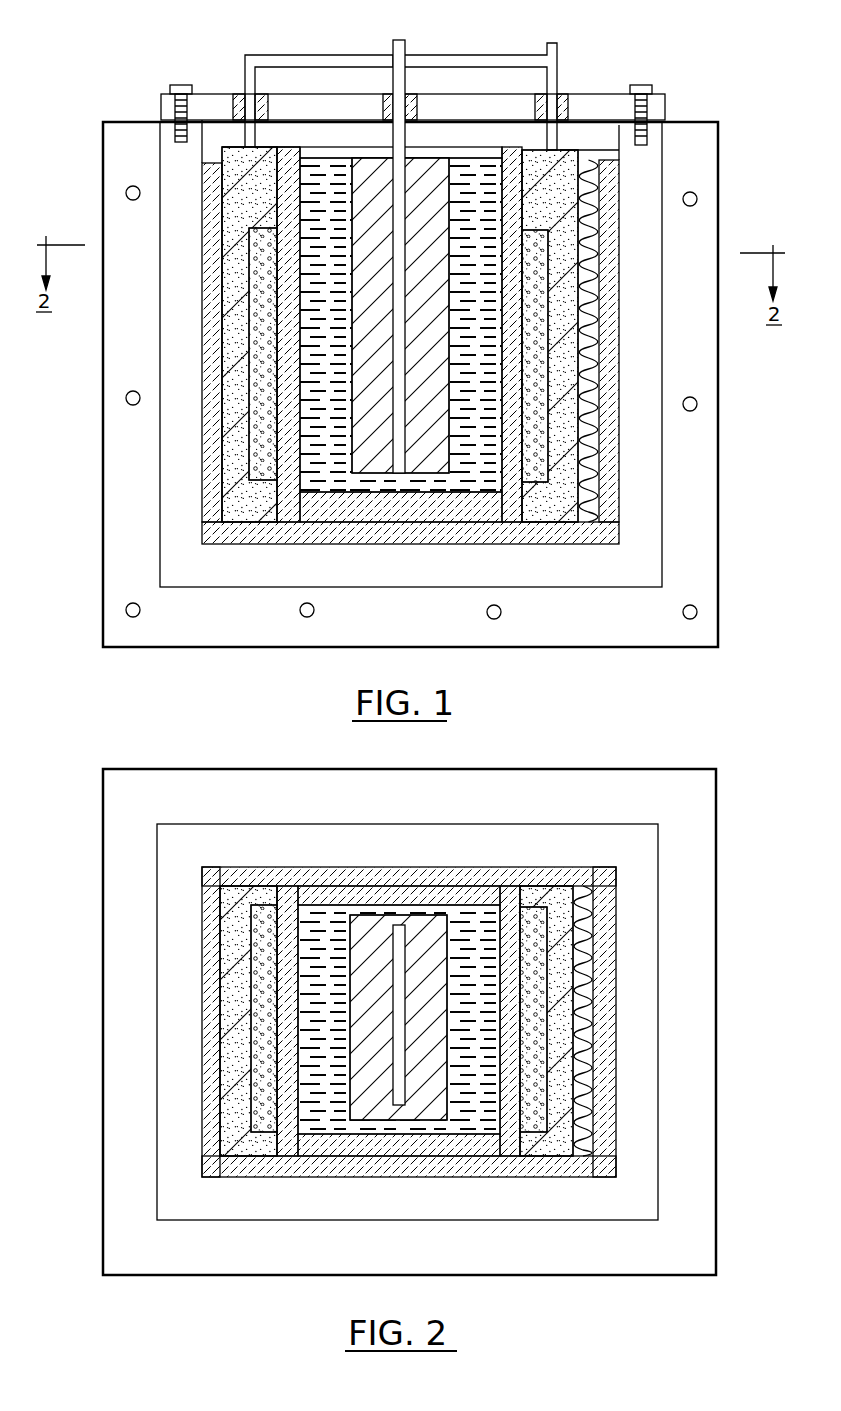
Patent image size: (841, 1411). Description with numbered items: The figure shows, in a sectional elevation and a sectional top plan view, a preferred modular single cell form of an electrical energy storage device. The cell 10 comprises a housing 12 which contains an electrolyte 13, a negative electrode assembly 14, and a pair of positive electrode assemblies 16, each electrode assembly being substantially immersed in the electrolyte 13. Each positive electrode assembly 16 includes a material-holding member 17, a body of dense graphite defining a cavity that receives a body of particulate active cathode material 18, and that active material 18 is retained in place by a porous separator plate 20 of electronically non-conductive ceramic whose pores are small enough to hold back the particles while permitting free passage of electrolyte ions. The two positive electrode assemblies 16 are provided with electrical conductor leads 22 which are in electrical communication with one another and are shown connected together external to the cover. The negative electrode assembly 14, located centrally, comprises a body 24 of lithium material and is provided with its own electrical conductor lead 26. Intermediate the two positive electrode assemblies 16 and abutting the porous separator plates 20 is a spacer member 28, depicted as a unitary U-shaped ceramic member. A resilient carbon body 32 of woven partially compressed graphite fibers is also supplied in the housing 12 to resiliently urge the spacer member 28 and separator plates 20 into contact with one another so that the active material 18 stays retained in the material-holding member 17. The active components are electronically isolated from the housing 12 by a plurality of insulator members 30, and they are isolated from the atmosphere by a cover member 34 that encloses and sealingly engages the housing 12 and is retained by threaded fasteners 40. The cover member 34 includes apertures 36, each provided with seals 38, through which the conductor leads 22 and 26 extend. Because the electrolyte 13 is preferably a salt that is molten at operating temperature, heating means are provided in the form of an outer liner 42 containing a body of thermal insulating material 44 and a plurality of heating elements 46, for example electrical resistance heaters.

In FIG. 1, the cell 10 is at (613, 92).
In FIG. 1, the housing 12 is at (665, 168).
In FIG. 2, the housing 12 is at (170, 838).
In FIG. 1, the electrolyte 13 is at (401, 325).
In FIG. 2, the electrolyte 13 is at (398, 1019).
In FIG. 1, the negative electrode assembly 14 is at (439, 152).
In FIG. 2, the negative electrode assembly 14 is at (398, 1017).
In FIG. 1, the positive electrode assembly 16 is at (237, 142).
In FIG. 1, the material-holding member 17 is at (258, 525).
In FIG. 2, the material-holding member 17 is at (560, 895).
In FIG. 1, the particulate active cathode material 18 is at (249, 320).
In FIG. 2, the particulate active cathode material 18 is at (262, 905).
In FIG. 1, the porous separator plate 20 is at (292, 525).
In FIG. 2, the porous separator plate 20 is at (290, 1160).
In FIG. 1, the electrical conductor lead 22 is at (330, 55).
In FIG. 1, the body of lithium material 24 is at (426, 236).
In FIG. 1, the electrical conductor lead 26 is at (405, 40).
In FIG. 1, the spacer member 28 is at (312, 150).
In FIG. 2, the spacer member 28 is at (400, 890).
In FIG. 1, the insulator member 30 is at (210, 505).
In FIG. 2, the insulator member 30 is at (210, 1042).
In FIG. 1, the resilient carbon body 32 is at (598, 390).
In FIG. 2, the resilient carbon body 32 is at (585, 1085).
In FIG. 1, the cover member 34 is at (665, 97).
In FIG. 1, the aperture 36 is at (268, 108).
In FIG. 1, the seal 38 is at (262, 100).
In FIG. 1, the threaded fastener 40 is at (174, 85).
In FIG. 1, the outer liner 42 is at (160, 392).
In FIG. 2, the outer liner 42 is at (157, 967).
In FIG. 1, the thermal insulating material 44 is at (115, 452).
In FIG. 2, the thermal insulating material 44 is at (120, 899).
In FIG. 1, the heating element 46 is at (126, 193).